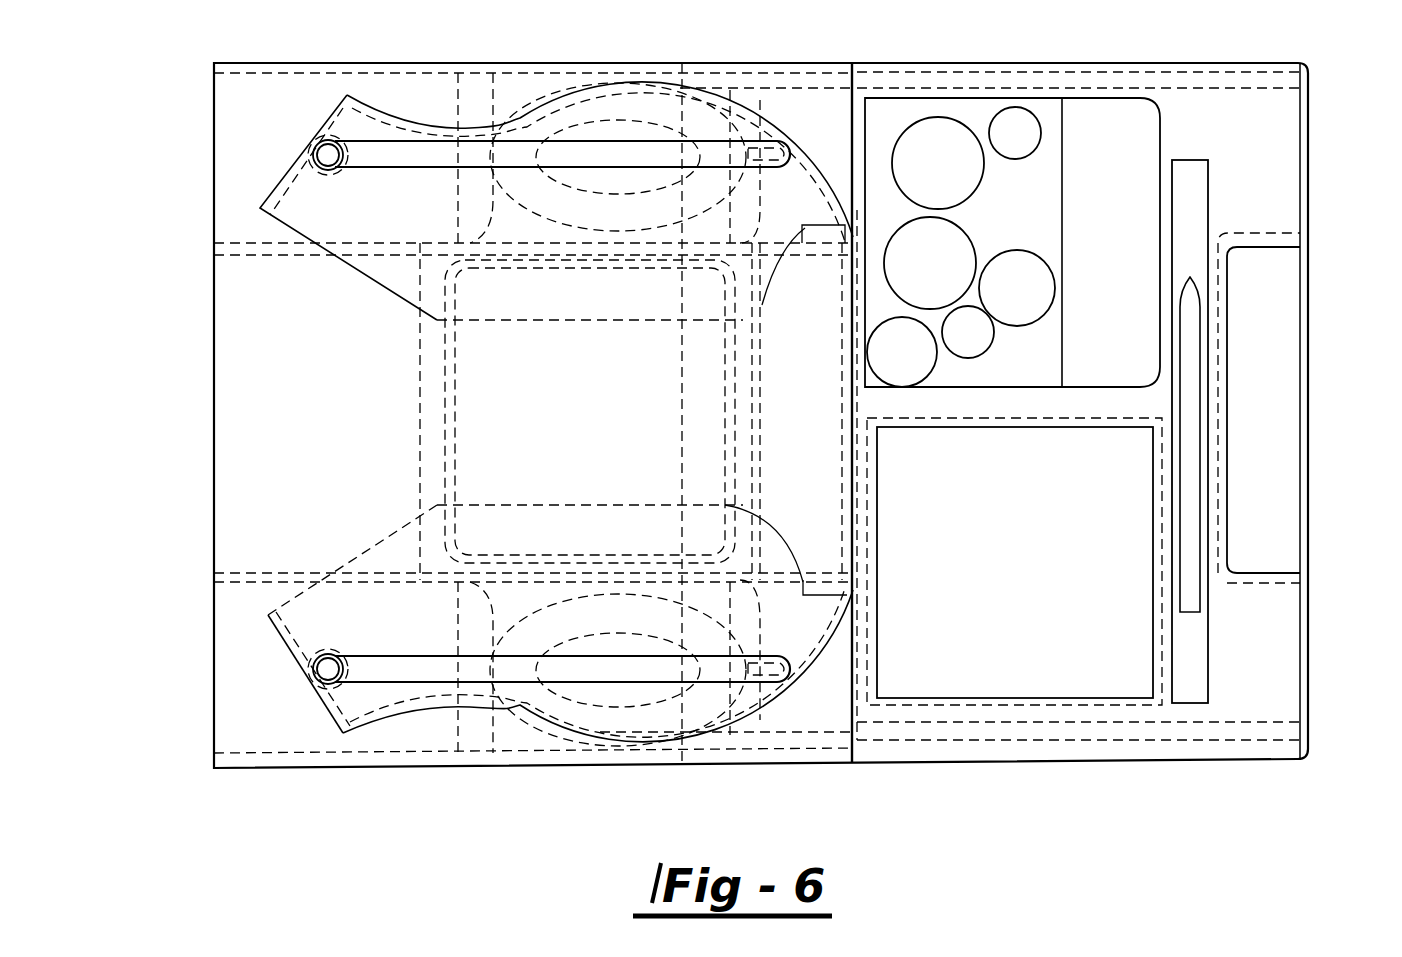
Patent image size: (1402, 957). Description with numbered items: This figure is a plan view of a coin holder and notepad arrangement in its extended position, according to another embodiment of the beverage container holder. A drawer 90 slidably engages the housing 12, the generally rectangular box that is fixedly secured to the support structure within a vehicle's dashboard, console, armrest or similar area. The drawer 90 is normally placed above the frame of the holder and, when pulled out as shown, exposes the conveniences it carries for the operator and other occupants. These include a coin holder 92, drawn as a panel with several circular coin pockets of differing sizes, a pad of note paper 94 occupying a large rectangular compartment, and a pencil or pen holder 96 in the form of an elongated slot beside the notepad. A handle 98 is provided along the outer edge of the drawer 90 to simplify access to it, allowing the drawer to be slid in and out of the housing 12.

The housing 12 is at (253, 465).
The drawer 90 is at (1270, 140).
The coin holder 92 is at (983, 117).
The pad of note paper 94 is at (975, 682).
The pencil or pen holder 96 is at (1193, 658).
The handle 98 is at (1273, 403).